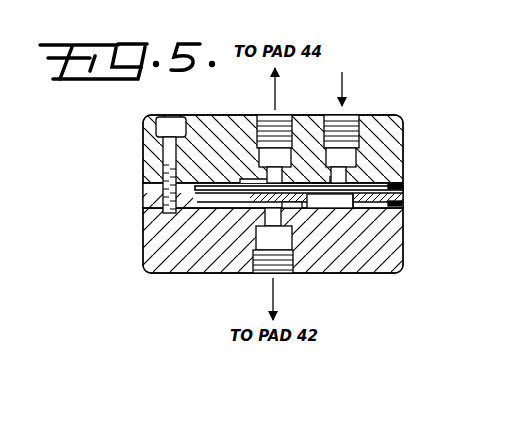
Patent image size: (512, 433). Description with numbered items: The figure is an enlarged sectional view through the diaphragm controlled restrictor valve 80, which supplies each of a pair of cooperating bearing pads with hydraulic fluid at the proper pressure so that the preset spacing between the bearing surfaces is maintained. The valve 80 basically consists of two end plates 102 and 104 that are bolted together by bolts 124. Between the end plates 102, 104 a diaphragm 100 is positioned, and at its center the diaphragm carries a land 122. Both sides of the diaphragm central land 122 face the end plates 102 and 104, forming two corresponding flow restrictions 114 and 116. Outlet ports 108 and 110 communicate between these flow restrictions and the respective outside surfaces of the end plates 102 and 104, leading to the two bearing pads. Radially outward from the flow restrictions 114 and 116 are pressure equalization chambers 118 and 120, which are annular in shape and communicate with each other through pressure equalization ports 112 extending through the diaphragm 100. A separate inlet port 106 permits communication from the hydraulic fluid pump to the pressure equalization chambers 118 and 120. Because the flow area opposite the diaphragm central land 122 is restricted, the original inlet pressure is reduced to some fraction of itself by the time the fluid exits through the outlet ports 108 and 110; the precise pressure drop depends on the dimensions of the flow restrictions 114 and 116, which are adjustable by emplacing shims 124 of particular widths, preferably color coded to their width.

The diaphragm controlled restrictor valve 80 is at (411, 123).
The diaphragm 100 is at (402, 190).
The end plate 102 is at (220, 130).
The end plate 104 is at (189, 274).
The inlet port 106 is at (352, 116).
The outlet port 108 is at (283, 116).
The outlet port 110 is at (287, 276).
The pressure equalization ports 112 is at (350, 188).
The flow restriction 114 is at (286, 182).
The flow restriction 116 is at (245, 210).
The pressure equalization chamber 118 is at (343, 204).
The pressure equalization chamber 120 is at (216, 182).
The diaphragm central land 122 is at (318, 207).
The bolts 124 is at (168, 149).